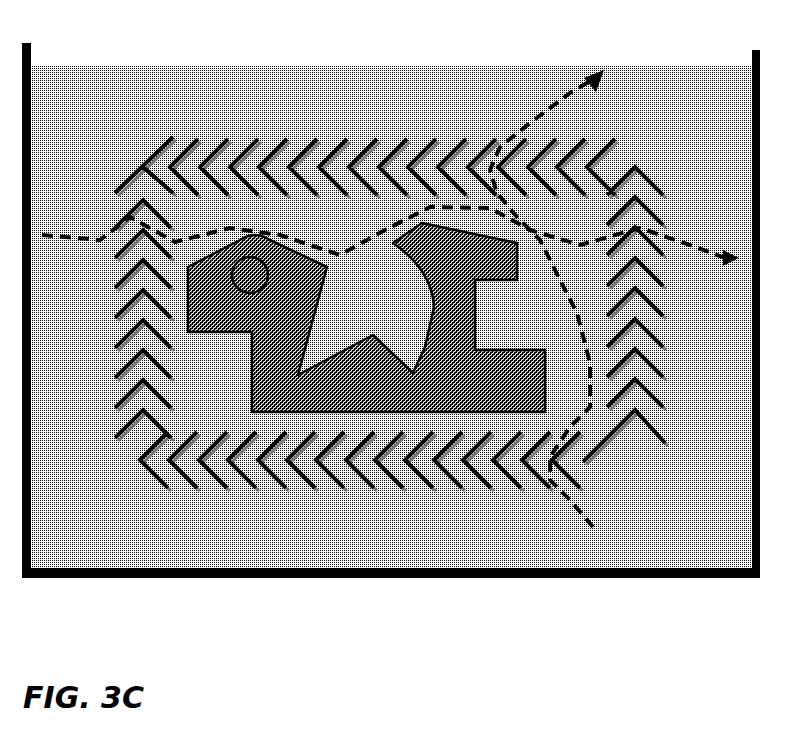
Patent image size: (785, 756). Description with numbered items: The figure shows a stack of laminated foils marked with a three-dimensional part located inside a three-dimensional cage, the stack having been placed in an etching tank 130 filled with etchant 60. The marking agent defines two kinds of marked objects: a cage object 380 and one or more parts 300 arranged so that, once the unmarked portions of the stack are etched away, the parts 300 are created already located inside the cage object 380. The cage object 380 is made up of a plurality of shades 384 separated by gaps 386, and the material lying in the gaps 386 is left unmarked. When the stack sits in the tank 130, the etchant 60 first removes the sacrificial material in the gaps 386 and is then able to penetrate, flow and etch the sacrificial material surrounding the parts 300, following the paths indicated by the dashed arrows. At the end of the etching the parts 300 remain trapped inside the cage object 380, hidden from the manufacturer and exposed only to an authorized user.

The etchant 60 is at (220, 65).
The tank 130 is at (30, 45).
The 3D part 300 is at (228, 335).
The cage object 380 is at (382, 495).
The shades 384 is at (661, 408).
The gaps 386 is at (668, 302).